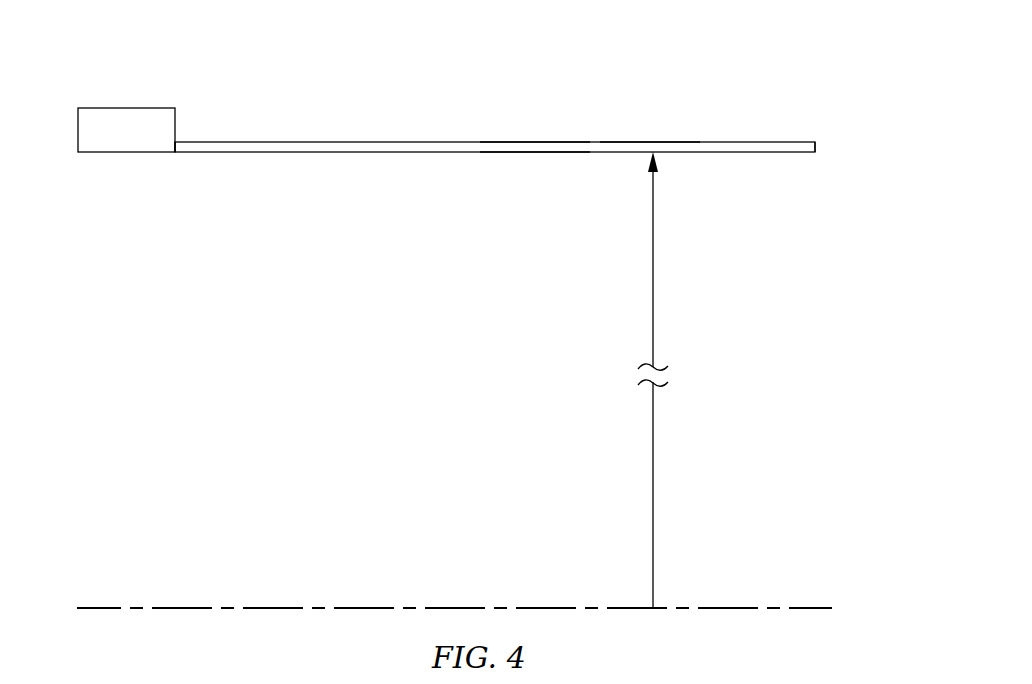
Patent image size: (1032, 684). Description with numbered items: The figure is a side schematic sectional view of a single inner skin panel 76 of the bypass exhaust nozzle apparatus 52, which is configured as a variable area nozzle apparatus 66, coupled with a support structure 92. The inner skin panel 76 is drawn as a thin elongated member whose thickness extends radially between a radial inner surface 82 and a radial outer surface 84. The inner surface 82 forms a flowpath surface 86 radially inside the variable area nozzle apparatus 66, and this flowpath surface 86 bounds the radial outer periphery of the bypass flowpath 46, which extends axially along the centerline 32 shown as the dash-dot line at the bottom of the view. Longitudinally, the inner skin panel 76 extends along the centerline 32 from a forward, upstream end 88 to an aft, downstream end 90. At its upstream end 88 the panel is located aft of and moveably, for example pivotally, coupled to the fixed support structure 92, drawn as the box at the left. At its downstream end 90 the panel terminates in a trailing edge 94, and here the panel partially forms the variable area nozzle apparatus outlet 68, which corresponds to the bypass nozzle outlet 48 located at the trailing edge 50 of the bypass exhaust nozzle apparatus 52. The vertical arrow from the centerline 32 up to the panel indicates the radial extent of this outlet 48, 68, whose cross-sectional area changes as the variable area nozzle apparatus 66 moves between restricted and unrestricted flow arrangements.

The centerline 32 is at (822, 608).
The bypass flowpath 46 is at (342, 298).
The bypass nozzle outlet 48 is at (772, 380).
The variable area nozzle apparatus outlet 68 is at (782, 387).
The trailing edge 50 is at (849, 190).
The downstream end 90 is at (849, 190).
The trailing edge 94 is at (817, 144).
The bypass exhaust nozzle apparatus 52 is at (672, 78).
The variable area nozzle apparatus 66 is at (661, 84).
The inner skin panel 76 is at (400, 167).
The radial inner surface 82 is at (535, 192).
The flowpath surface 86 is at (535, 153).
The radial outer surface 84 is at (533, 142).
The upstream end 88 is at (175, 153).
The support structure 92 is at (90, 172).